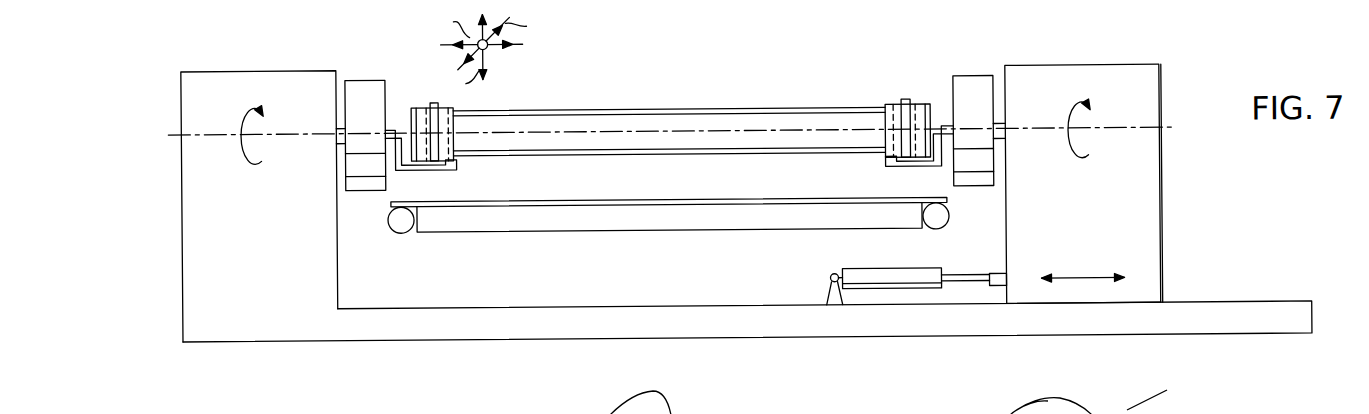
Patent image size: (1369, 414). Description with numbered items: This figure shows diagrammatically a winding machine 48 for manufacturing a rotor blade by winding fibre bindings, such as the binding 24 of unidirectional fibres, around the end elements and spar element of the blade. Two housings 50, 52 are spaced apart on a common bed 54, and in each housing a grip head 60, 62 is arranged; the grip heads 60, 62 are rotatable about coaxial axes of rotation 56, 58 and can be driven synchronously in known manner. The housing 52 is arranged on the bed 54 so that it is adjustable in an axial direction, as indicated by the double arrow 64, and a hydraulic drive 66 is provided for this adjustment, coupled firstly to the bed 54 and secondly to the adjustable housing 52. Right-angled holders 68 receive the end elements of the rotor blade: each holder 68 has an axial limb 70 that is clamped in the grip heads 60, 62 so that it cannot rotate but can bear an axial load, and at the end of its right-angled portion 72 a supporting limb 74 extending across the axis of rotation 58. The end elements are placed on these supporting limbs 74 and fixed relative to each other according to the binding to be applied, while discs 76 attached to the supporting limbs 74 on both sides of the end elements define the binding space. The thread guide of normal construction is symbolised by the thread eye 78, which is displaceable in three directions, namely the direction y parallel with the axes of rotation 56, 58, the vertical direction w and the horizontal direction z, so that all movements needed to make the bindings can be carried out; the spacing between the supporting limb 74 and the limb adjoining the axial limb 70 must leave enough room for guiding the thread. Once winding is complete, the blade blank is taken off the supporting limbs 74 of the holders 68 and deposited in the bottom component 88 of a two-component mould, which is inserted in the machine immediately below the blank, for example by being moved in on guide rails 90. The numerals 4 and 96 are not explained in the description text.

The tube workpiece 4 is at (669, 106).
The binding 24 is at (698, 116).
The winding machine 48 is at (298, 353).
The housing 50 is at (183, 250).
The housing 52 is at (1160, 223).
The bed 54 is at (445, 330).
The axis 56 is at (229, 135).
The axis 58 is at (1139, 135).
The grip head 60 is at (372, 89).
The grip head 62 is at (973, 88).
The double arrow 64 is at (1077, 286).
The hydraulic drive 66 is at (857, 276).
The right-angled holder 68 is at (428, 182).
The axial limb 70 is at (398, 132).
The right-angled portion 72 is at (448, 172).
The supporting limb 74 is at (436, 105).
The disc 76 is at (455, 110).
The thread eye 78 is at (490, 47).
The bottom component 88 is at (707, 236).
The guide rails 90 is at (397, 224).
The table edge 96 is at (613, 237).